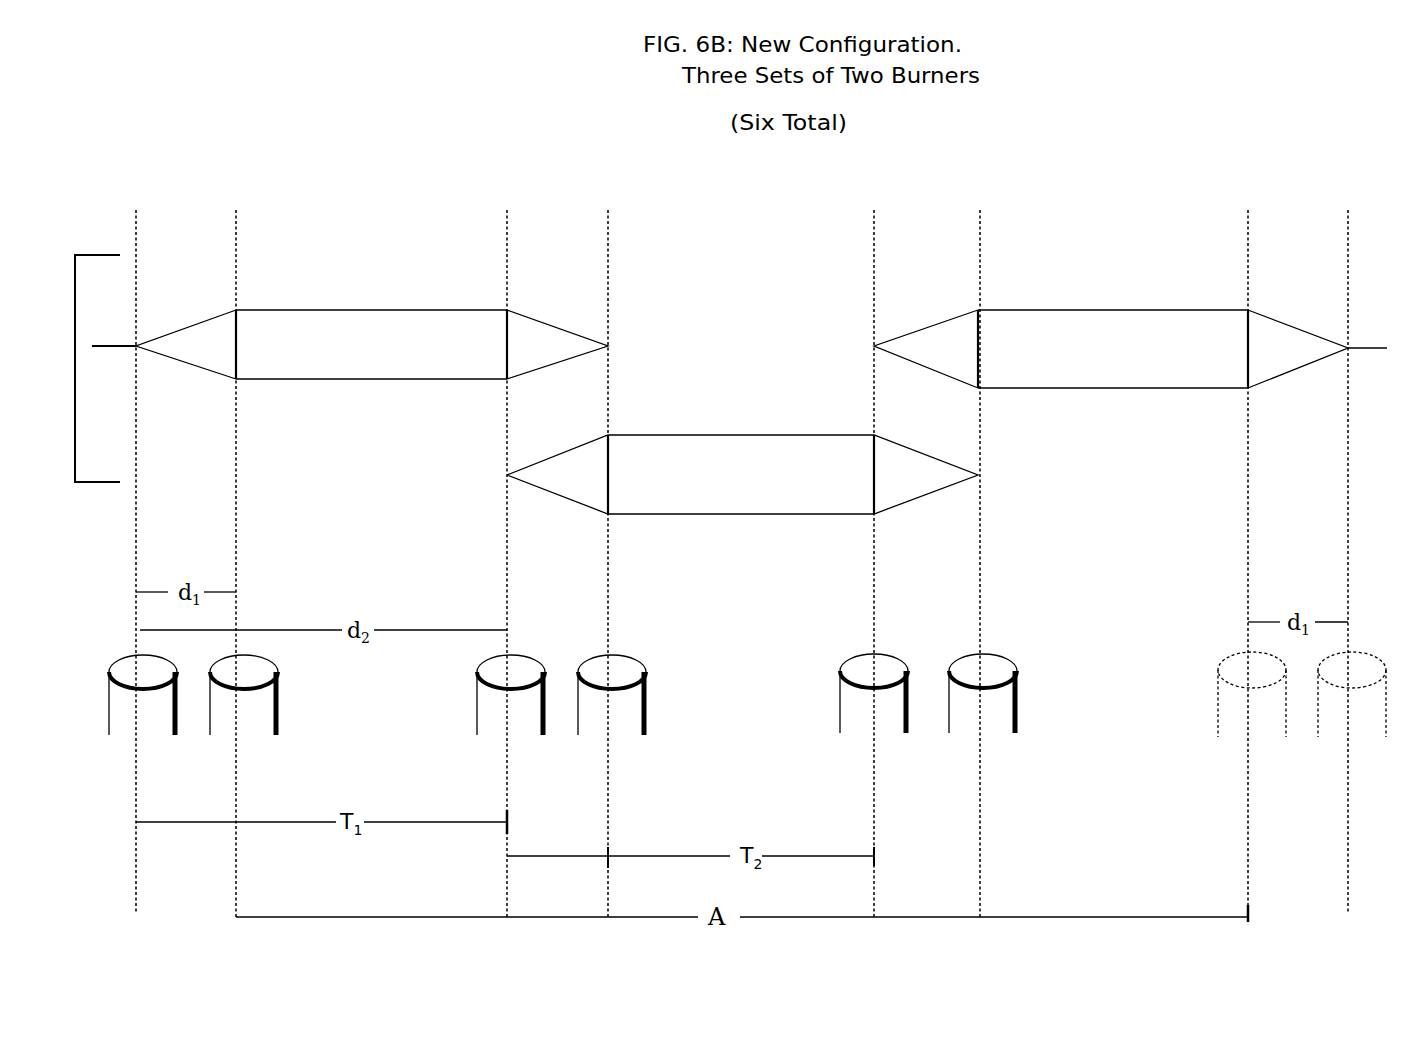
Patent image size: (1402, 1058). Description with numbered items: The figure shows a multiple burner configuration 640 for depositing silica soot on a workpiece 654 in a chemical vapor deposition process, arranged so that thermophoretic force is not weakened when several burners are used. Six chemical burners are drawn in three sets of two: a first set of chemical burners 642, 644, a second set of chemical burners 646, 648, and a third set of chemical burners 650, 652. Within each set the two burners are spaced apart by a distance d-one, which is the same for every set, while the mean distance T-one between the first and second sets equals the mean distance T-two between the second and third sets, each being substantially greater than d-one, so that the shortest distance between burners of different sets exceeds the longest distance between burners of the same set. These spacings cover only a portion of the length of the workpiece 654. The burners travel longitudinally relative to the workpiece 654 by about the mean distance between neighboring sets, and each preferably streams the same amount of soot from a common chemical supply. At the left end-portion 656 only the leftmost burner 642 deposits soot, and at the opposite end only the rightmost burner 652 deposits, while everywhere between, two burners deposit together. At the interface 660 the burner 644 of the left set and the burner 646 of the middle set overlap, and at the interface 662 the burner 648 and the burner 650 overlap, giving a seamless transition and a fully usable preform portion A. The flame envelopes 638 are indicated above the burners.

The flame 638 is at (1296, 282).
The multiple burner configuration 640 is at (1171, 282).
The chemical burner 642 is at (148, 736).
The chemical burner 644 is at (242, 736).
The chemical burner 646 is at (510, 731).
The chemical burner 648 is at (610, 731).
The chemical burner 650 is at (873, 730).
The chemical burner 652 is at (988, 730).
The workpiece 654 is at (66, 368).
The left end-portion 656 is at (181, 288).
The interface 660 is at (551, 283).
The interface 662 is at (926, 282).